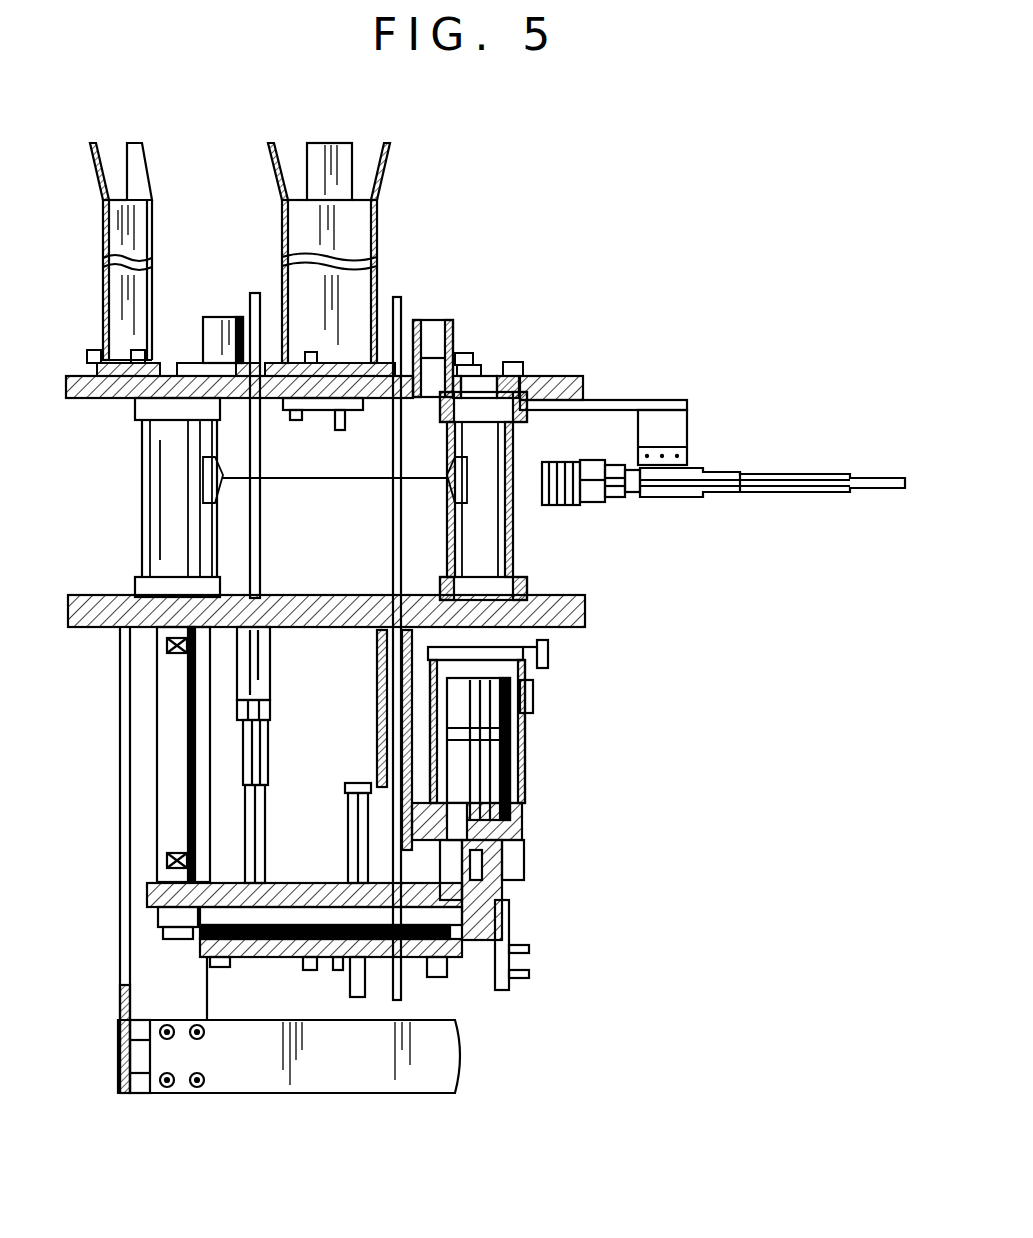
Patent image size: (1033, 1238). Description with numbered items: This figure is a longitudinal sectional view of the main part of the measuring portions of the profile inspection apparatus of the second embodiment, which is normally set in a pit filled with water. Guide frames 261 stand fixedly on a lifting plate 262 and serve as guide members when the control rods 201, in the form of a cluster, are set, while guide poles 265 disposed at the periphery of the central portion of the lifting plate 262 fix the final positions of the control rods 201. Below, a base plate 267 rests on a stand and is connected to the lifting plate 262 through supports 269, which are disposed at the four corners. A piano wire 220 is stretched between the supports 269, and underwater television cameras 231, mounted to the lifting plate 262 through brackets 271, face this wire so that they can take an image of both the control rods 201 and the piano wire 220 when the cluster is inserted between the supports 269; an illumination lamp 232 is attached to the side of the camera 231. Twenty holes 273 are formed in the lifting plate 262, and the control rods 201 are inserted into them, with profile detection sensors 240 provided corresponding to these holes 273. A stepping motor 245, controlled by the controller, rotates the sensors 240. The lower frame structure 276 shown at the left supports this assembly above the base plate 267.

The guide frame 261 is at (152, 217).
The guide pole 265 is at (214, 317).
The lifting plate 262 is at (545, 377).
The bracket 271 is at (687, 425).
The illumination lamp 232 is at (593, 504).
The underwater television camera 231 is at (685, 500).
The control rod 201 is at (200, 452).
The support 269 is at (140, 480).
The piano wire 220 is at (333, 480).
The hole 273 is at (262, 440).
The base plate 267 is at (585, 622).
The profile detection sensor 240 is at (378, 690).
The stepping motor 245 is at (485, 793).
The frame 276 is at (120, 905).